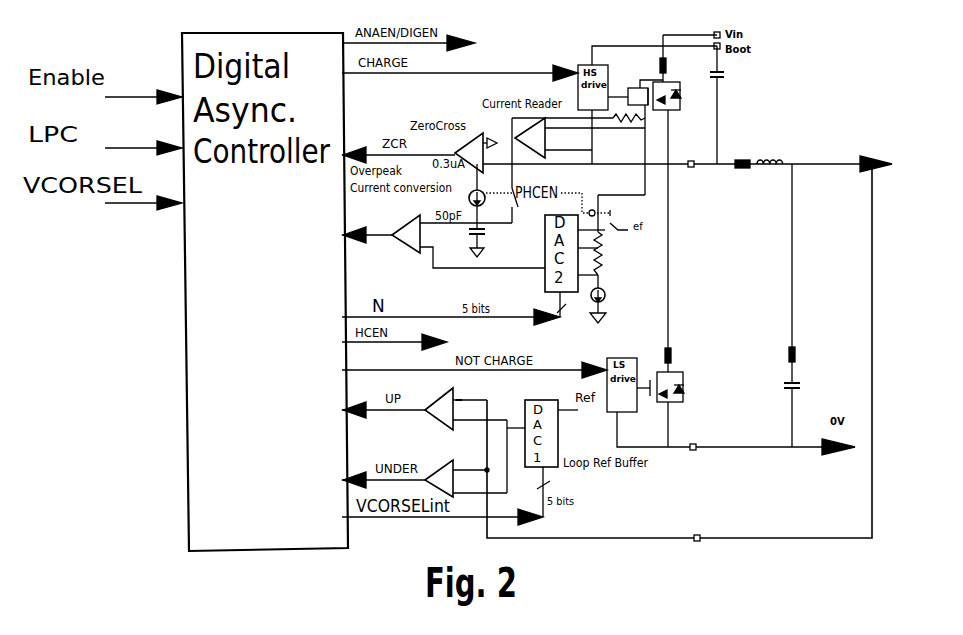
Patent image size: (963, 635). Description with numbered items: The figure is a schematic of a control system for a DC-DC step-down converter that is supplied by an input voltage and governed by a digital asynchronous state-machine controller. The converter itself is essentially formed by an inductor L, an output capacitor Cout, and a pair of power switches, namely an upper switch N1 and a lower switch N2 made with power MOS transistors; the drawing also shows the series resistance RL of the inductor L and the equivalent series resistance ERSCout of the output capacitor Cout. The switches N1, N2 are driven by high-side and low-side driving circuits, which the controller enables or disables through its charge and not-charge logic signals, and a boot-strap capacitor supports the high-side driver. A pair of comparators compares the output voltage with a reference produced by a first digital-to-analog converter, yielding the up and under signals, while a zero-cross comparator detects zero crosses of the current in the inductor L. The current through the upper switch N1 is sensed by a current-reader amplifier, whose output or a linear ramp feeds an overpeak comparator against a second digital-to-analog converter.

The upper switch N1 is at (644, 191).
The lower switch N2 is at (661, 397).
The inductor series resistance RL is at (743, 156).
The inductor L is at (770, 154).
The output capacitor equivalent series resistance ERSCout is at (819, 263).
The output capacitor Cout is at (806, 404).